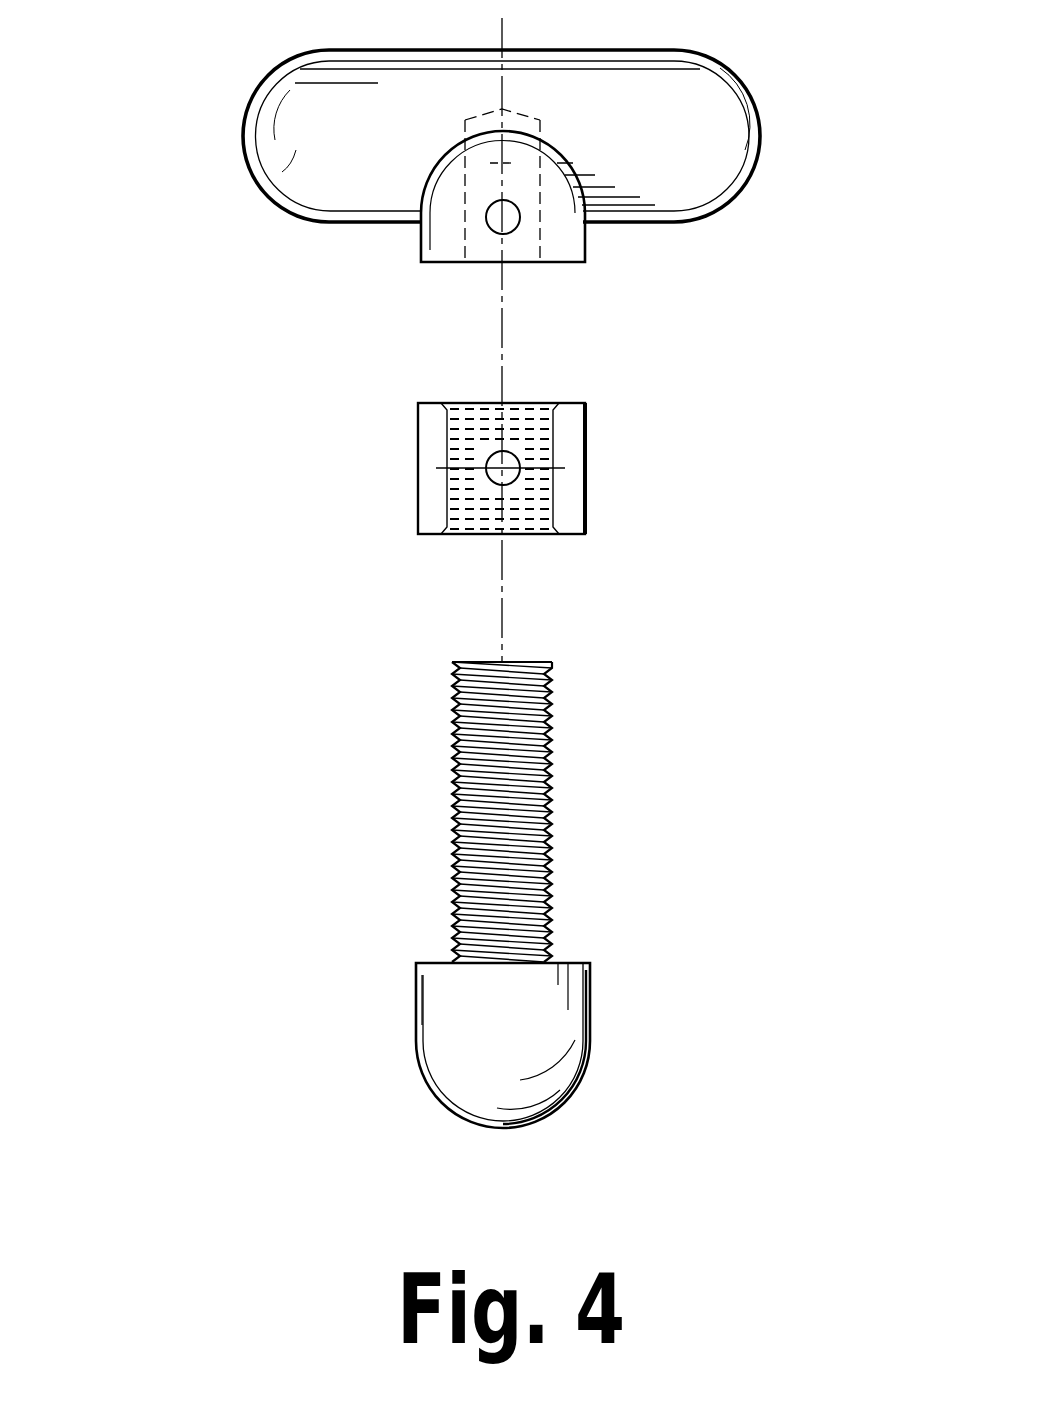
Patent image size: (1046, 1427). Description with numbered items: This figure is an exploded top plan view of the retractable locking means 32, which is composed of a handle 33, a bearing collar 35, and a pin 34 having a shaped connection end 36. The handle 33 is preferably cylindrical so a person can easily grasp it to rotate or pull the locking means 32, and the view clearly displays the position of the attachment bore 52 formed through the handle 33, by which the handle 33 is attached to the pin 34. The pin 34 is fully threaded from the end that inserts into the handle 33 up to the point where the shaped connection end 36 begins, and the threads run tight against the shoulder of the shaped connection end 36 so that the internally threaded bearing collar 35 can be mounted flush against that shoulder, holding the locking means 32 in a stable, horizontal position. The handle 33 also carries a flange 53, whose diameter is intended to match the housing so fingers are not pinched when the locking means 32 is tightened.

The retractable locking means 32 is at (368, 362).
The handle 33 is at (673, 101).
The pin 34 is at (553, 781).
The bearing collar 35 is at (585, 472).
The shaped connection end 36 is at (540, 1083).
The attachment bore 52 is at (520, 224).
The flange 53 is at (432, 247).